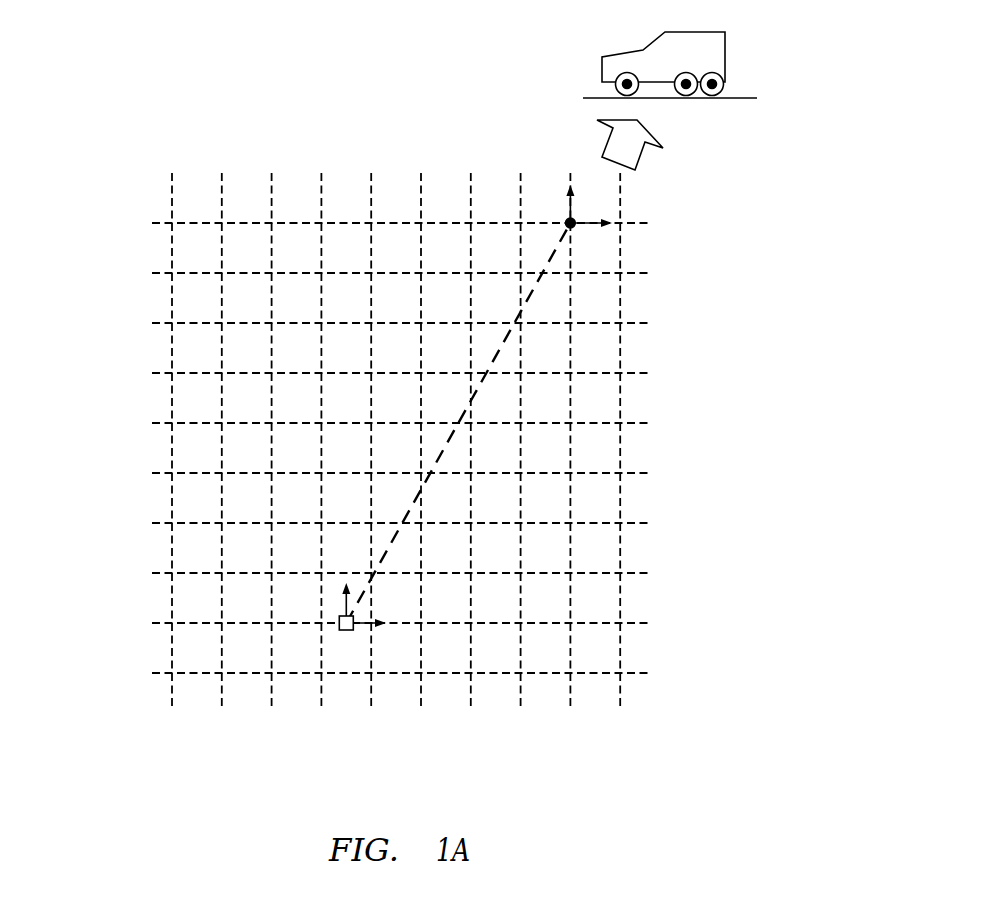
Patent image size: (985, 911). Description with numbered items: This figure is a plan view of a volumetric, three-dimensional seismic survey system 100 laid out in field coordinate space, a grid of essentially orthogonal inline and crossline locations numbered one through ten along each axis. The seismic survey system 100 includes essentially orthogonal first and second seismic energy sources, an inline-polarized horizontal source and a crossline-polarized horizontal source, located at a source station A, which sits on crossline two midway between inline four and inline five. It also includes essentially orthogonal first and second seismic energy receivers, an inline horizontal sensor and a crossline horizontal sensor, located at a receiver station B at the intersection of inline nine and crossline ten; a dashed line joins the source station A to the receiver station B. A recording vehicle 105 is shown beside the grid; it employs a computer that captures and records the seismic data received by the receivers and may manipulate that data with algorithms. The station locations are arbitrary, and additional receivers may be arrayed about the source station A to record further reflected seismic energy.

The seismic survey system 100 is at (890, 83).
The recording vehicle 105 is at (750, 78).
The source station A is at (360, 623).
The receiver station B is at (577, 222).